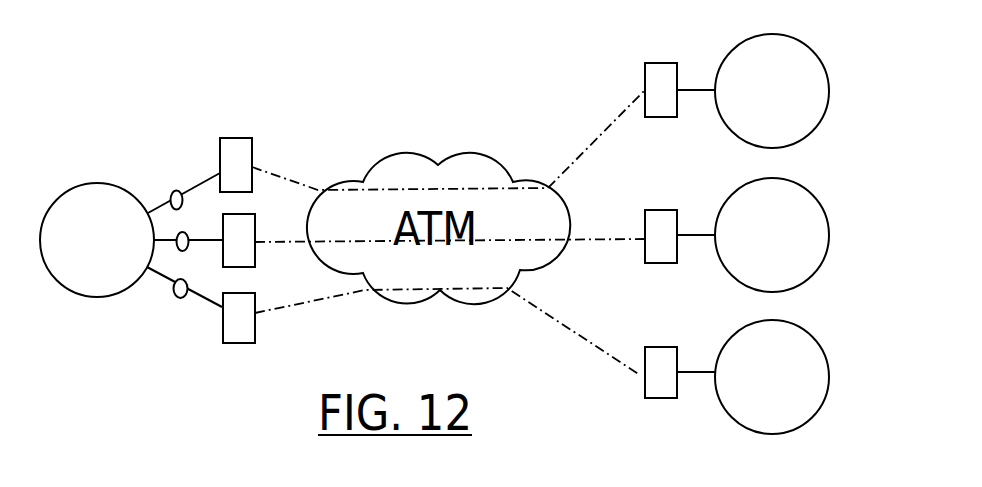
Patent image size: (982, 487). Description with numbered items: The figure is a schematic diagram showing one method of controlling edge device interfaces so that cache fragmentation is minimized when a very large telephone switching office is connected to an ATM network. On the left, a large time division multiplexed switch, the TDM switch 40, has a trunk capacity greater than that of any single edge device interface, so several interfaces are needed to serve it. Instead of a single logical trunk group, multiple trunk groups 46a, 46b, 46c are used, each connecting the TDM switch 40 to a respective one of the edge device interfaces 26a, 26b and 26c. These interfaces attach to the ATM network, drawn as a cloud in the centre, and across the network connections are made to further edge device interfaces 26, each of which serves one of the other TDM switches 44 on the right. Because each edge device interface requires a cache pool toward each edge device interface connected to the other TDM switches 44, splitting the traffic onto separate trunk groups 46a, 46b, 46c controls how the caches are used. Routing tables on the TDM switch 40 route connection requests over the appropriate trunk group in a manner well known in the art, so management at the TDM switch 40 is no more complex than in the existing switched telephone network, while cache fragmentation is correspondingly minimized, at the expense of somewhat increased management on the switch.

The TDM switch 40 is at (95, 195).
The trunk group 46a is at (172, 191).
The trunk group 46b is at (177, 252).
The trunk group 46c is at (178, 297).
The edge device interface 26a is at (240, 138).
The edge device interface 26b is at (257, 259).
The edge device interface 26c is at (237, 347).
The edge device interface 26 is at (667, 63).
The other TDM switch 44 is at (800, 40).